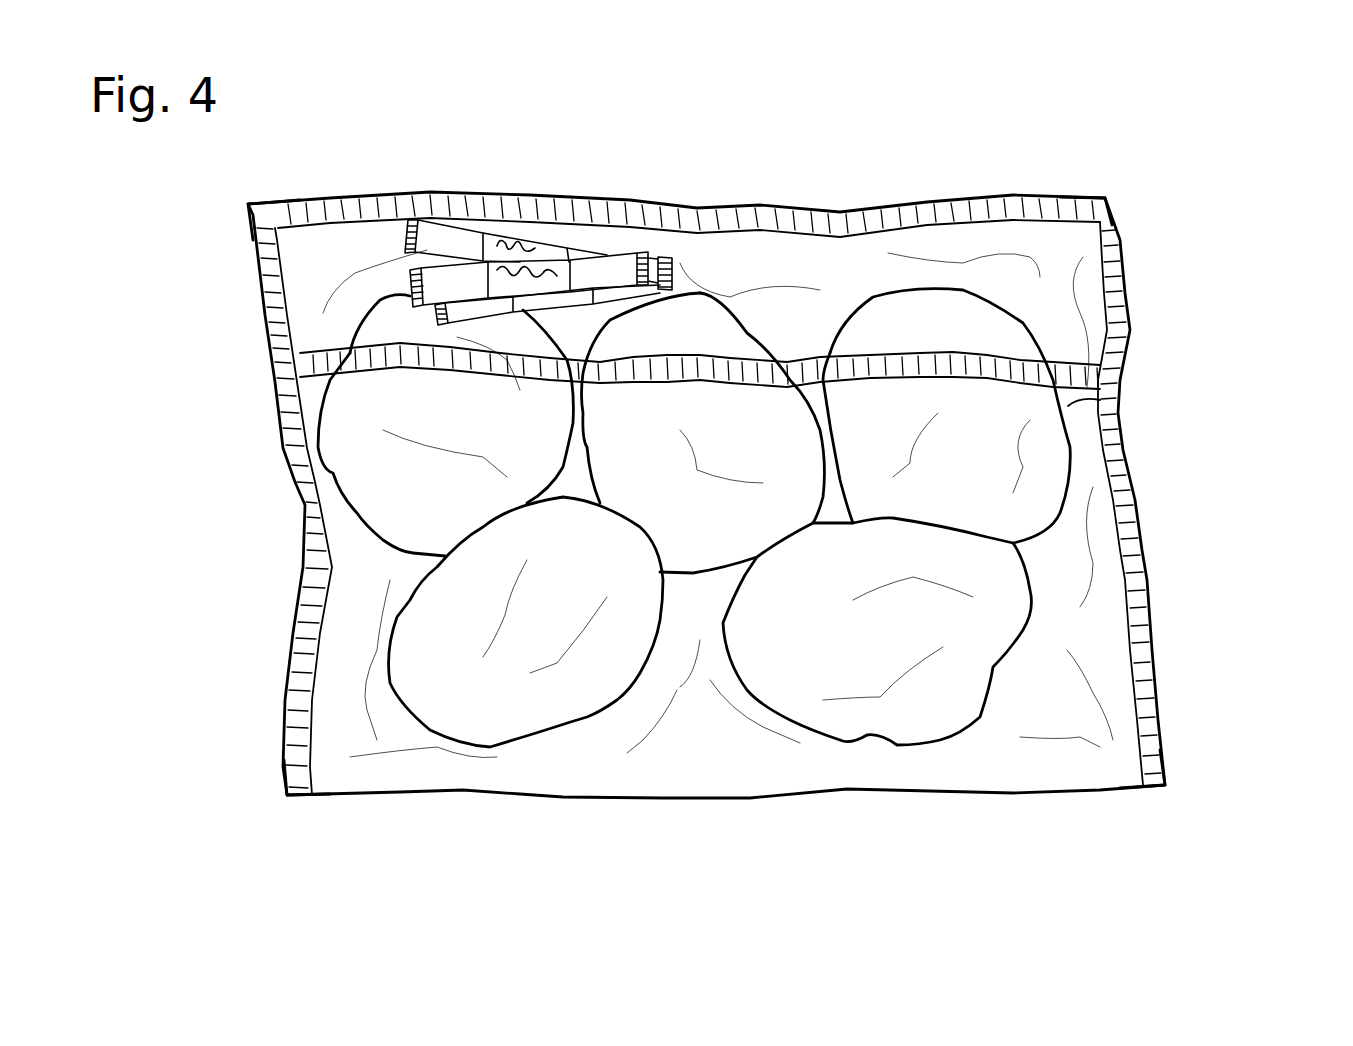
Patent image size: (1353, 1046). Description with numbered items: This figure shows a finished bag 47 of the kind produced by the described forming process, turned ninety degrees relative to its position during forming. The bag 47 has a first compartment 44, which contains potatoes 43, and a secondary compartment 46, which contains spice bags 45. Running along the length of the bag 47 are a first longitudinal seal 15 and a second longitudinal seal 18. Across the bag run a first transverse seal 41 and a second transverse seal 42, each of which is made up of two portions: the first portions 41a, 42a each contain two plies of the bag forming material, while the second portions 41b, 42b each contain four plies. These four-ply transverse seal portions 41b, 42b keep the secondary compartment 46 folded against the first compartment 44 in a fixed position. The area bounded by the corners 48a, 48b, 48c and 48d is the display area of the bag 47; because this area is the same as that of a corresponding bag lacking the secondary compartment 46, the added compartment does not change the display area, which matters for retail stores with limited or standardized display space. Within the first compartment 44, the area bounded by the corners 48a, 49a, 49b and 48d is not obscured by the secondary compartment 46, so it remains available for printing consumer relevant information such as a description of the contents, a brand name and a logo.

The finished bag 47 is at (1087, 173).
The first longitudinal seal 15 is at (912, 207).
The spice bags 45 is at (512, 243).
The secondary compartment 46 is at (712, 262).
The corner 48a is at (300, 793).
The corner 48b is at (257, 213).
The corner 48c is at (1100, 205).
The corner 48d is at (1147, 773).
The first transverse seal 41 is at (1222, 193).
The first portion of first transverse seal 41a is at (1133, 633).
The second portion of first transverse seal 41b is at (1112, 267).
The second transverse seal 42 is at (193, 207).
The first portion of second transverse seal 42a is at (322, 578).
The second portion of second transverse seal 42b is at (284, 321).
The corner 49a is at (317, 380).
The corner 49b is at (1068, 406).
The second longitudinal seal 18 is at (1072, 377).
The potatoes 43 is at (435, 520).
The first compartment 44 is at (1050, 752).